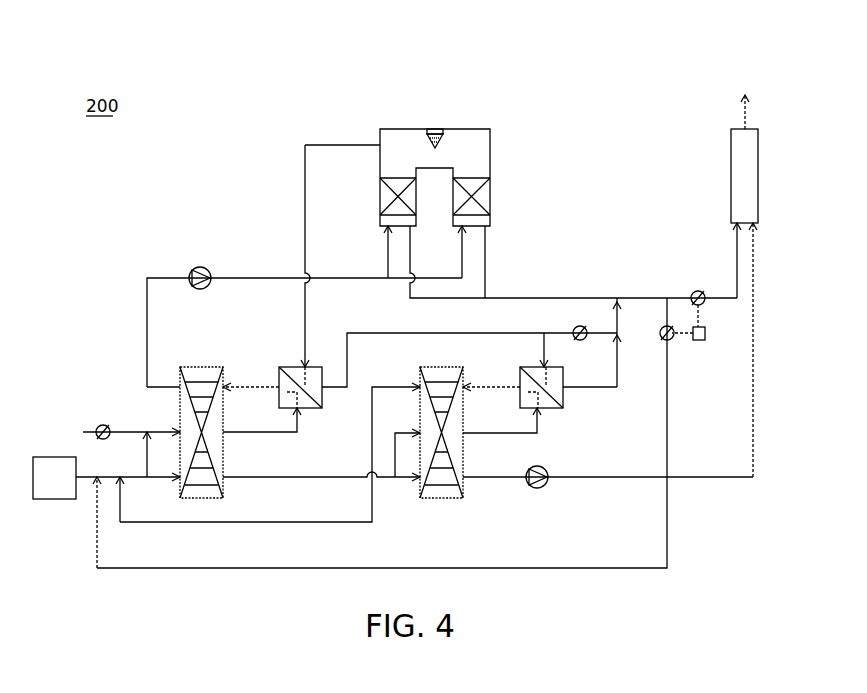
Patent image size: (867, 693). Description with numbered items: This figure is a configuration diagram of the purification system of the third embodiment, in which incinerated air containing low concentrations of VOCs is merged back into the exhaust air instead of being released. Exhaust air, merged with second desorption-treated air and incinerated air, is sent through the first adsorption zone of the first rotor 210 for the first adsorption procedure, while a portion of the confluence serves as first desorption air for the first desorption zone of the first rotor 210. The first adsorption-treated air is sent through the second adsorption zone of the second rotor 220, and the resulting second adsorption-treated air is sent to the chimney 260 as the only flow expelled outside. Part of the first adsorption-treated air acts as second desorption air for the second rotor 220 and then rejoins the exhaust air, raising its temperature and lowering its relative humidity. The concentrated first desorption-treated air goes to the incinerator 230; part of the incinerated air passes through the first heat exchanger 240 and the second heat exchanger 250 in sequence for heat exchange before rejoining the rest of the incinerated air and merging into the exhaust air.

The first rotor 210 is at (223, 458).
The second rotor 220 is at (463, 458).
The incinerator 230 is at (441, 108).
The first heat exchanger 240 is at (307, 362).
The second heat exchanger 250 is at (553, 409).
The chimney 260 is at (758, 178).